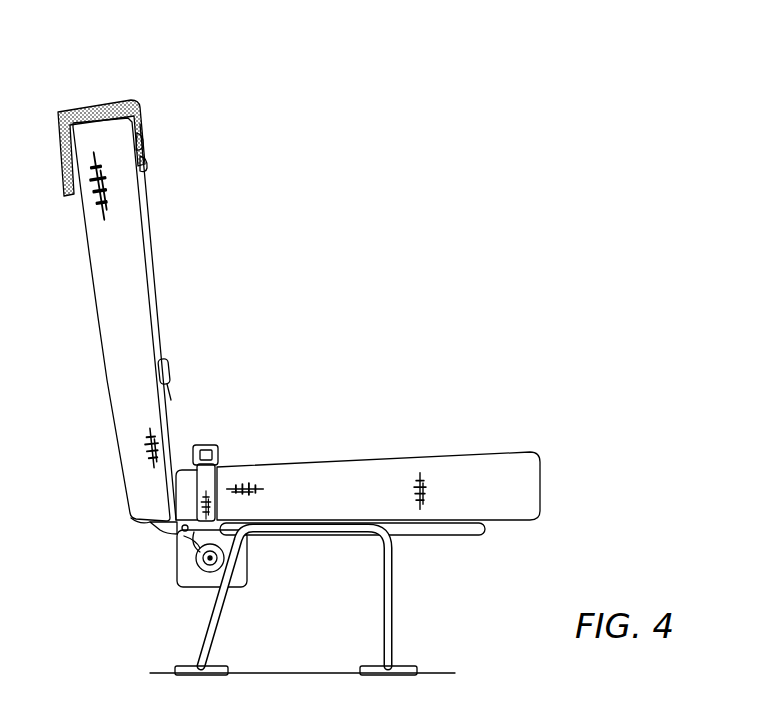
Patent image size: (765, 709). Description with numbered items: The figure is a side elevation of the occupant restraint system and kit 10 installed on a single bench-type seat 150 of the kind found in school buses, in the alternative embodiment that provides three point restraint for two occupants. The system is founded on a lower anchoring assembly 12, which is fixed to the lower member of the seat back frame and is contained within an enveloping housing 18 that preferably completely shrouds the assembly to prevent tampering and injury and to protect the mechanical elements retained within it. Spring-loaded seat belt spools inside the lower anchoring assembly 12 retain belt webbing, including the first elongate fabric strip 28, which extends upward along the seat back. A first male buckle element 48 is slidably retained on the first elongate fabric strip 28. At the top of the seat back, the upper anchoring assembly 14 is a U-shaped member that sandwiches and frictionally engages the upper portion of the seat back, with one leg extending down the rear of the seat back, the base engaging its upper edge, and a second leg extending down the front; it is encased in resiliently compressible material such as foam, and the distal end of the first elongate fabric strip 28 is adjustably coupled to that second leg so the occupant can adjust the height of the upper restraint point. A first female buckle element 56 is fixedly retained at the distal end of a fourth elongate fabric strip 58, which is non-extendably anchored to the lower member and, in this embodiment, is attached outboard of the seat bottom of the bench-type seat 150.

The occupant restraint system and kit 10 is at (192, 196).
The lower anchoring assembly 12 is at (256, 576).
The upper anchoring assembly 14 is at (146, 96).
The enveloping housing 18 is at (176, 562).
The first elongate fabric strip 28 is at (150, 243).
The first male buckle element 48 is at (170, 370).
The first female buckle element 56 is at (208, 446).
The fourth elongate fabric strip 58 is at (218, 474).
The bench-type seat 150 is at (428, 395).